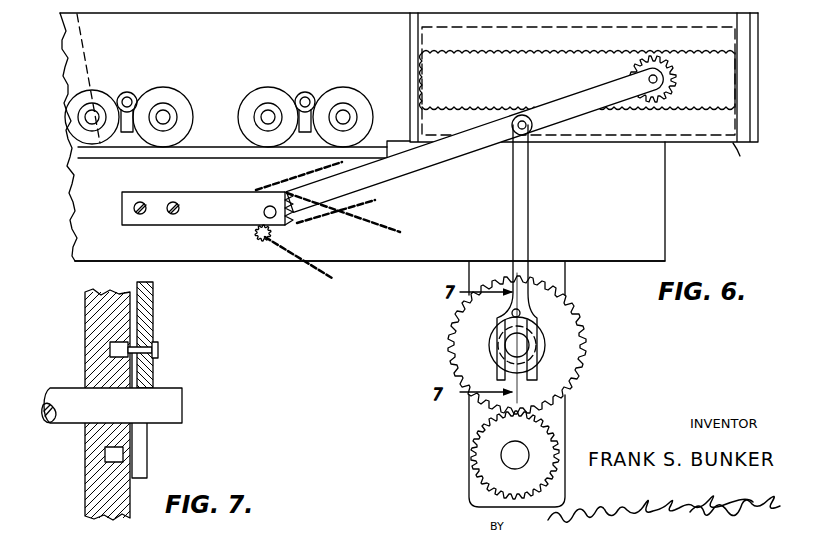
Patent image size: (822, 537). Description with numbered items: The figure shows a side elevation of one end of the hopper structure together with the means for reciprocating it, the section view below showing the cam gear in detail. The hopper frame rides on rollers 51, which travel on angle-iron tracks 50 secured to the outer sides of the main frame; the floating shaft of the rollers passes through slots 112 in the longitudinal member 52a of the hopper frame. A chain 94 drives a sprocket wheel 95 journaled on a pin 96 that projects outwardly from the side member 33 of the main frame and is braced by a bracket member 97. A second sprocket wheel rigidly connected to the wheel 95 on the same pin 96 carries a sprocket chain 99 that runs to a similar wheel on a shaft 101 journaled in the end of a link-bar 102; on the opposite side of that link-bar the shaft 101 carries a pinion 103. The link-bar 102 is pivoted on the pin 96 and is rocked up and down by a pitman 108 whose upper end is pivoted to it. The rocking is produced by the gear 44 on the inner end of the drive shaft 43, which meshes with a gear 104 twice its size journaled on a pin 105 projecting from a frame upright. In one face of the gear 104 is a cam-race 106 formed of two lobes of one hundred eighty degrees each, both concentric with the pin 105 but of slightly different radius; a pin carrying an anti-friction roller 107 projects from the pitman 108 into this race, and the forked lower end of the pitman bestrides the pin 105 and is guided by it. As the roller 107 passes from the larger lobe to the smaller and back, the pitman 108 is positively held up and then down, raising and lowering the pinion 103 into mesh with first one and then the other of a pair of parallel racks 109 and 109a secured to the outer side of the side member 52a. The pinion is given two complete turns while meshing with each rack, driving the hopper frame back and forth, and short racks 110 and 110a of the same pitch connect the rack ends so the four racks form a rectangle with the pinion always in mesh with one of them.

In FIG. 6, the side member 33 is at (650, 201).
In FIG. 6, the shaft 43 is at (512, 453).
In FIG. 6, the gear 44 is at (497, 433).
In FIG. 6, the angle-iron tracks 50 is at (82, 157).
In FIG. 6, the rollers 51 is at (258, 97).
In FIG. 6, the longitudinal member 52a is at (72, 63).
In FIG. 6, the chain 94 is at (333, 278).
In FIG. 6, the sprocket wheel 95 is at (256, 237).
In FIG. 6, the pin 96 is at (272, 216).
In FIG. 6, the bracket member 97 is at (228, 210).
In FIG. 6, the sprocket chain 99 is at (372, 202).
In FIG. 6, the shaft 101 is at (634, 72).
In FIG. 6, the link-bar 102 is at (445, 156).
In FIG. 6, the pinion 103 is at (660, 62).
In FIG. 6, the gear 104 is at (568, 343).
In FIG. 7, the gear 104 is at (93, 311).
In FIG. 6, the pin 105 is at (506, 342).
In FIG. 7, the pin 105 is at (62, 398).
In FIG. 6, the cam-race 106 is at (548, 336).
In FIG. 7, the cam-race 106 is at (110, 350).
In FIG. 7, the anti-friction roller 107 is at (133, 342).
In FIG. 6, the pitman 108 is at (529, 222).
In FIG. 7, the pitman 108 is at (153, 290).
In FIG. 6, the rack 109 is at (572, 56).
In FIG. 6, the rack 109a is at (476, 107).
In FIG. 6, the short rack 110 is at (418, 80).
In FIG. 6, the short rack 110a is at (749, 160).
In FIG. 6, the slots 112 is at (134, 92).